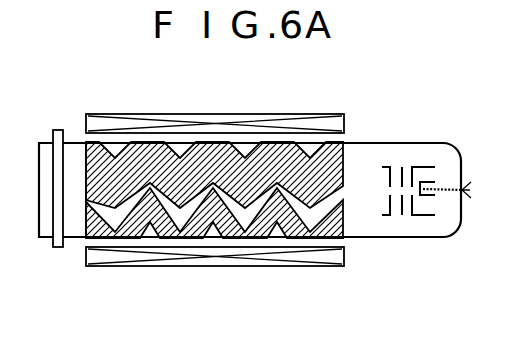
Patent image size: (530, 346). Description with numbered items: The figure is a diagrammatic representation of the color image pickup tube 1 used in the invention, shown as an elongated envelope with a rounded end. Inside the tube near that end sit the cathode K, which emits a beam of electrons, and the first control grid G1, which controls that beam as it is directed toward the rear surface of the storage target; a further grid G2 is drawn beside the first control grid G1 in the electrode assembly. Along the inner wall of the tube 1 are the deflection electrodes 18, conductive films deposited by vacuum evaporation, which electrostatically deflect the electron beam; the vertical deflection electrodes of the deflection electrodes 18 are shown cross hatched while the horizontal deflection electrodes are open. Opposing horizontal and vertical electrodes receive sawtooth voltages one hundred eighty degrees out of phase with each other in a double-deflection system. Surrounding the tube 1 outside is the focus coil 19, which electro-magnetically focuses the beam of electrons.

The color image pickup tube 1 is at (72, 141).
The deflection electrodes 18 is at (278, 158).
The focus coil 19 is at (200, 114).
The first control grid G1 is at (421, 162).
The second grid G2 is at (397, 162).
The cathode K is at (428, 180).